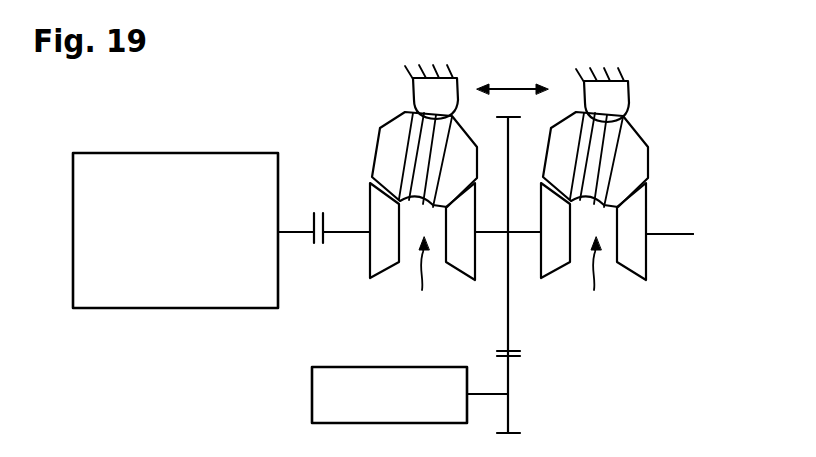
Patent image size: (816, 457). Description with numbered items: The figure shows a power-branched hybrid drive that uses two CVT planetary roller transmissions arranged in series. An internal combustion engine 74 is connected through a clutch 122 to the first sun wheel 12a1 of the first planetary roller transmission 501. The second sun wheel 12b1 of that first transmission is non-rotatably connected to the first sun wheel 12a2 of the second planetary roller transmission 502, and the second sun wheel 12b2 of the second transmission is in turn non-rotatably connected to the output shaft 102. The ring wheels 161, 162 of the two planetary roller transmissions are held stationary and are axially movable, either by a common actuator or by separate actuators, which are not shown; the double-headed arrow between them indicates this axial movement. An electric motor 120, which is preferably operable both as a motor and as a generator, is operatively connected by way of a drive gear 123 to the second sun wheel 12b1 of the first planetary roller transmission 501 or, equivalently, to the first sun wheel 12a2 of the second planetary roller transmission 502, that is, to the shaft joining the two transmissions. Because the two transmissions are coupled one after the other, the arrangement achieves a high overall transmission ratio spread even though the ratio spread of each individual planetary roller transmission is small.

The internal combustion engine 74 is at (179, 164).
The clutch 122 is at (320, 246).
The first sun wheel of the first planetary roller transmission 12a1 is at (380, 256).
The second sun wheel of the first planetary roller transmission 12b1 is at (458, 258).
The ring wheel of the first planetary roller transmission 161 is at (413, 92).
The first planetary roller transmission 501 is at (430, 280).
The first sun wheel of the second planetary roller transmission 12a2 is at (557, 256).
The second sun wheel of the second planetary roller transmission 12b2 is at (638, 261).
The ring wheel of the second planetary roller transmission 162 is at (637, 101).
The second planetary roller transmission 502 is at (602, 280).
The output shaft 102 is at (684, 232).
The drive gear 123 is at (510, 410).
The electric motor 120 is at (312, 395).